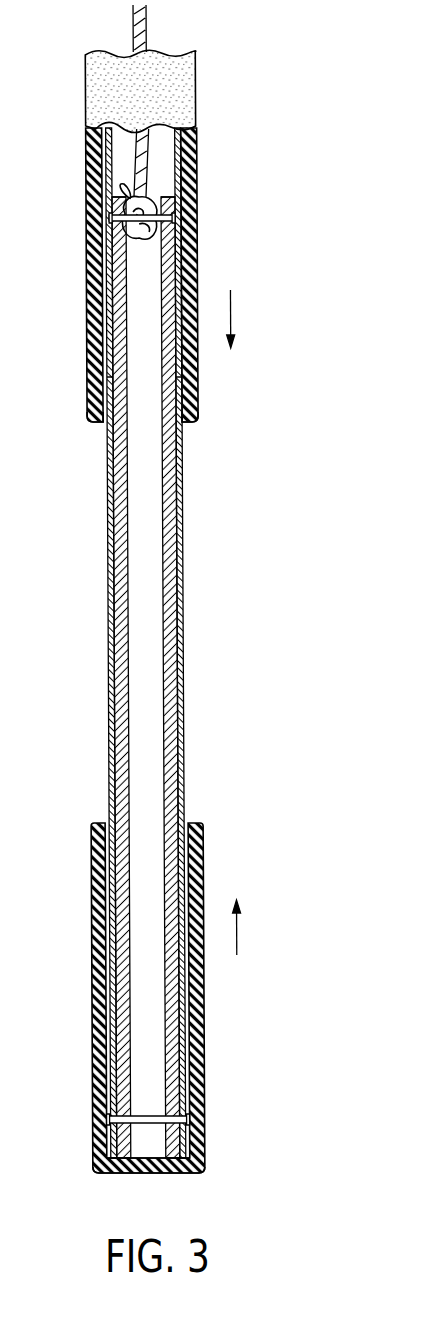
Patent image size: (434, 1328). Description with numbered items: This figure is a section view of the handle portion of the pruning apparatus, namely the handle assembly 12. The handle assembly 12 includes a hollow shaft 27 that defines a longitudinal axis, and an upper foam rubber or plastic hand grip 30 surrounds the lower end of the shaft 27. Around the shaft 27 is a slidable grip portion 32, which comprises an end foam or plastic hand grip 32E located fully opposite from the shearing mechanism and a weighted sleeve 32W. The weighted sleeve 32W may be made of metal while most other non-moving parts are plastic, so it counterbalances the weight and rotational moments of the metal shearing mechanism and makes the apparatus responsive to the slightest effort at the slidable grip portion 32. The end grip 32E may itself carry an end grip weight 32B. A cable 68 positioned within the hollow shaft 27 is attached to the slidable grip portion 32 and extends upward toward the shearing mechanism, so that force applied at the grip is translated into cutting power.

The handle assembly 12 is at (162, 586).
The cable 68 is at (150, 33).
The upper hand grip 30 is at (88, 395).
The hollow shaft 27 is at (183, 424).
The slidable grip portion 32 is at (205, 643).
The weighted sleeve 32W is at (180, 711).
The end grip weight 32B is at (182, 823).
The end hand grip 32E is at (200, 1050).